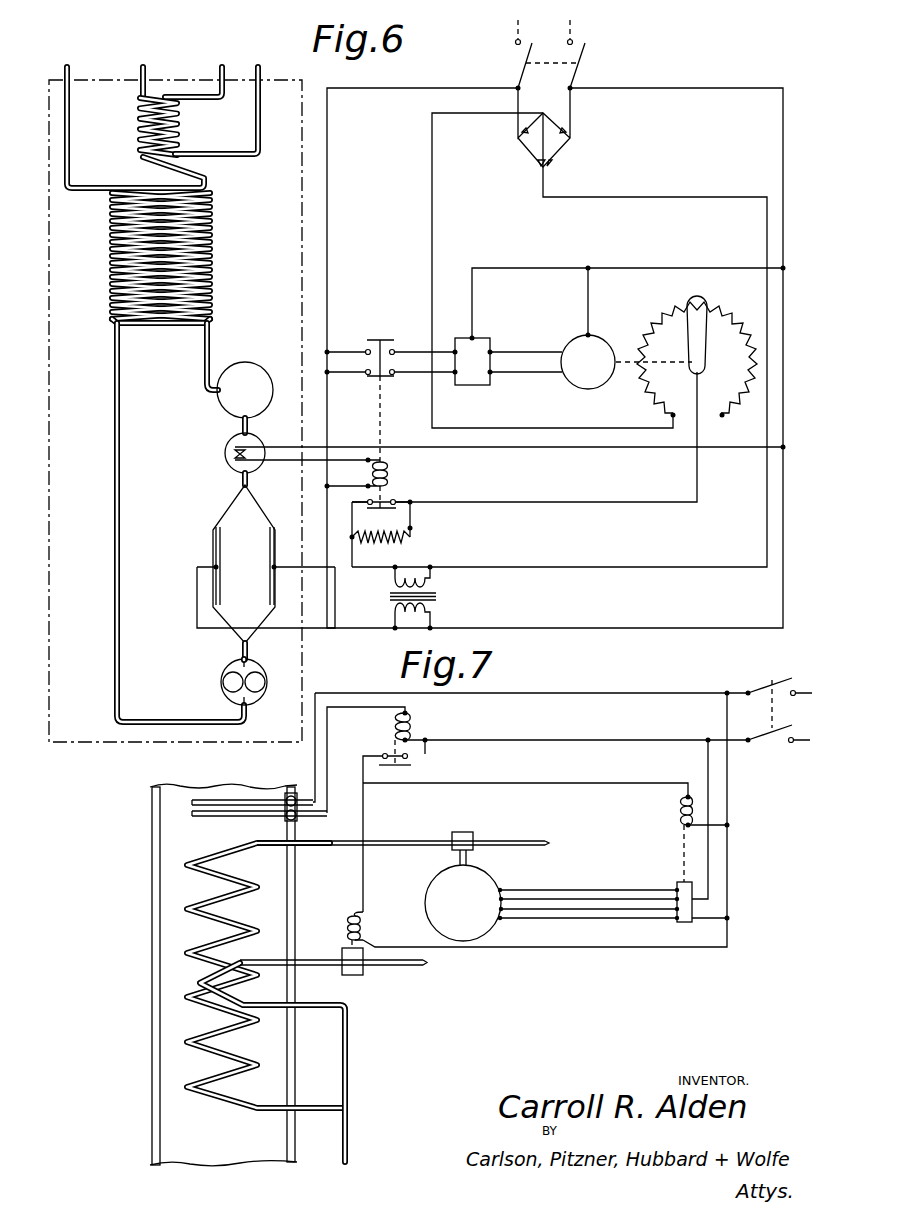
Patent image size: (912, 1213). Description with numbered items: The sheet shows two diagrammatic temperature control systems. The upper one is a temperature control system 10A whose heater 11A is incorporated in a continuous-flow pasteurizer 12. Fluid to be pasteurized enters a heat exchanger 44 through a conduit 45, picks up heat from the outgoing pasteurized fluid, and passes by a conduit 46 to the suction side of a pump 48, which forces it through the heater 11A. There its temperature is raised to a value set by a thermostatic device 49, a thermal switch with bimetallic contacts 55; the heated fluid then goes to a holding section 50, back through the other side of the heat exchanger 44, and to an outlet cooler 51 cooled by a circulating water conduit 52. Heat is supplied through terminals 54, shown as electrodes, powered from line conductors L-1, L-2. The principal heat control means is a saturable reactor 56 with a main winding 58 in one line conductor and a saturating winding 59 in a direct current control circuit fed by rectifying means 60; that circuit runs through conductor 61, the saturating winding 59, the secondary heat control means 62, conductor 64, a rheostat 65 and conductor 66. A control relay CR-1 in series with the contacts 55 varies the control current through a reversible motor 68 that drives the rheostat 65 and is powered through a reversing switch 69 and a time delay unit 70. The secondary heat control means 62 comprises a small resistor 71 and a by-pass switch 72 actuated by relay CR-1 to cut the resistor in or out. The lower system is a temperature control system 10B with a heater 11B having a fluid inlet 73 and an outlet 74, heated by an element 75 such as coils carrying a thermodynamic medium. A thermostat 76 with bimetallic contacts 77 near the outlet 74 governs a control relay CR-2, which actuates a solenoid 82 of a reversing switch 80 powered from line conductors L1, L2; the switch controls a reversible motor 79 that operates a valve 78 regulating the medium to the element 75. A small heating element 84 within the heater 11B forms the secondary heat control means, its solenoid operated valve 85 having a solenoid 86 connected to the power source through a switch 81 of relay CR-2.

In FIG. 6, the continuous-flow pasteurizer 12 is at (76, 746).
In FIG. 6, the conduit 45 is at (70, 140).
In FIG. 6, the outlet cooler 51 is at (138, 115).
In FIG. 6, the circulating water conduit 52 is at (191, 100).
In FIG. 6, the heat exchanger 44 is at (223, 289).
In FIG. 6, the conduit 46 is at (114, 612).
In FIG. 6, the holding section 50 is at (250, 363).
In FIG. 6, the thermostatic device 49 is at (226, 458).
In FIG. 6, the bimetallic contacts 55 is at (248, 450).
In FIG. 6, the heater 11A is at (228, 514).
In FIG. 6, the terminals 54 is at (214, 545).
In FIG. 6, the pump 48 is at (228, 668).
In FIG. 6, the temperature control system 10A is at (600, 630).
In FIG. 6, the line conductor L-1 is at (483, 88).
In FIG. 6, the line conductor L-2 is at (663, 88).
In FIG. 6, the rectifying means 60 is at (576, 152).
In FIG. 6, the conductor 61 is at (612, 200).
In FIG. 6, the conductor 66 is at (432, 218).
In FIG. 6, the reversing switch 69 is at (375, 335).
In FIG. 6, the time delay unit 70 is at (470, 386).
In FIG. 6, the reversible motor 68 is at (580, 388).
In FIG. 6, the rheostat 65 is at (685, 303).
In FIG. 6, the control relay CR-1 is at (380, 480).
In FIG. 6, the by-pass switch 72 is at (388, 510).
In FIG. 6, the secondary heat control means 62 is at (416, 532).
In FIG. 6, the resistor 71 is at (390, 540).
In FIG. 6, the conductor 64 is at (522, 505).
In FIG. 6, the saturable reactor 56 is at (438, 594).
In FIG. 6, the saturating winding 59 is at (393, 580).
In FIG. 6, the main winding 58 is at (432, 608).
In FIG. 7, the heater 11B is at (150, 912).
In FIG. 7, the outlet 74 is at (176, 784).
In FIG. 7, the fluid inlet 73 is at (207, 1164).
In FIG. 7, the thermostat 76 is at (180, 808).
In FIG. 7, the bimetallic contacts 77 is at (237, 804).
In FIG. 7, the element 75 is at (188, 875).
In FIG. 7, the heating element 84 is at (205, 977).
In FIG. 7, the valve 78 is at (463, 832).
In FIG. 7, the reversible motor 79 is at (480, 880).
In FIG. 7, the reversing switch 80 is at (686, 924).
In FIG. 7, the temperature control system 10B is at (516, 968).
In FIG. 7, the line conductor L1 is at (745, 693).
In FIG. 7, the line conductor L2 is at (738, 742).
In FIG. 7, the control relay CR-2 is at (571, 739).
In FIG. 7, the switch 81 is at (408, 767).
In FIG. 7, the solenoid 82 is at (678, 812).
In FIG. 7, the solenoid 86 is at (364, 925).
In FIG. 7, the solenoid operated valve 85 is at (356, 976).